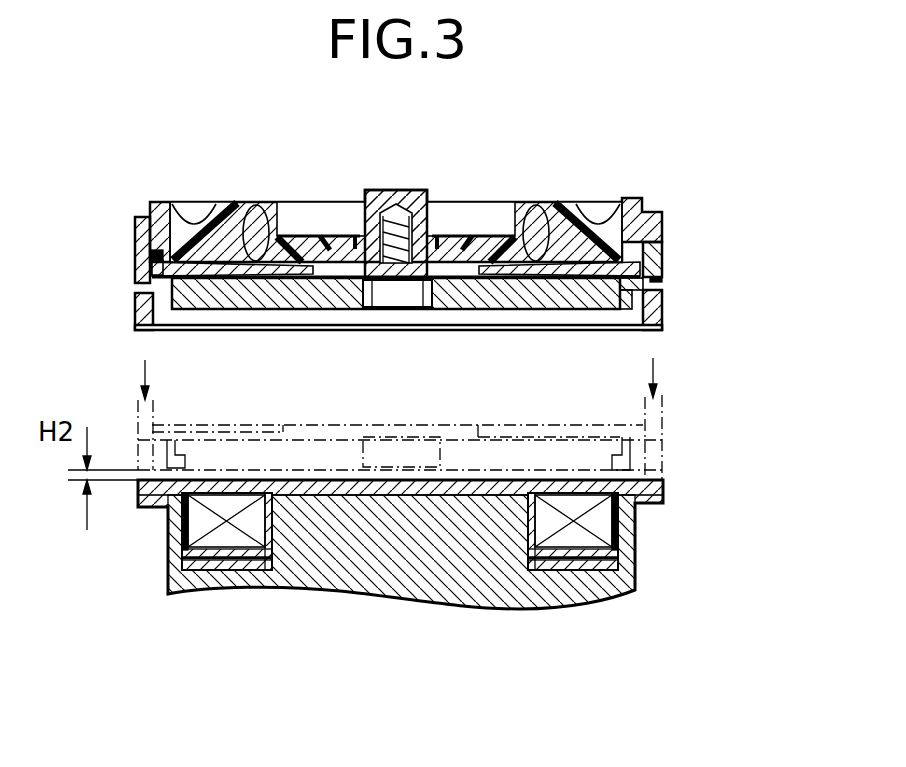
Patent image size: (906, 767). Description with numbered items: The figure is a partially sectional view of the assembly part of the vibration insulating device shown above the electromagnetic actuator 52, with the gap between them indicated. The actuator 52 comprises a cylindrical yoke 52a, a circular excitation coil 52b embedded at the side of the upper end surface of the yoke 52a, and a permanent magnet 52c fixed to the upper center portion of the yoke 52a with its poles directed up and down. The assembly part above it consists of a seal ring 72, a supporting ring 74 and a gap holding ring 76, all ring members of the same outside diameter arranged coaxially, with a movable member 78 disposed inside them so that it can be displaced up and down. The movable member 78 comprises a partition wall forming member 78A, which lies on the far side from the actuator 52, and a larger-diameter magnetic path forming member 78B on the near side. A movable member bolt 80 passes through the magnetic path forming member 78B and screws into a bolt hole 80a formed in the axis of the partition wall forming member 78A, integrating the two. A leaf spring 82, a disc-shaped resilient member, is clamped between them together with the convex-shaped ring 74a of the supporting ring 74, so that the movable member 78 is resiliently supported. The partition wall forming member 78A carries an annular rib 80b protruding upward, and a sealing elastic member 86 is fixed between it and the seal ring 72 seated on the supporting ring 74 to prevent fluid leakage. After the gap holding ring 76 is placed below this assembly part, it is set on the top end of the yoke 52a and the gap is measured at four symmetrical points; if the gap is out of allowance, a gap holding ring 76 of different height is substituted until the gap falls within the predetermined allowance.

The seal ring 72 is at (652, 227).
The supporting ring 74 is at (652, 258).
The convex-shaped ring 74a is at (657, 280).
The gap holding ring 76 is at (658, 316).
The movable member 78 is at (434, 206).
The partition wall forming member 78A is at (441, 249).
The magnetic path forming member 78B is at (334, 413).
The movable member bolt 80 is at (397, 292).
The bolt hole 80a is at (378, 214).
The annular rib 80b is at (248, 207).
The leaf spring 82 is at (141, 258).
The sealing elastic member 86 is at (177, 224).
The electromagnetic actuator 52 is at (400, 608).
The yoke 52a is at (302, 527).
The excitation coil 52b is at (398, 672).
The permanent magnet 52c is at (379, 492).